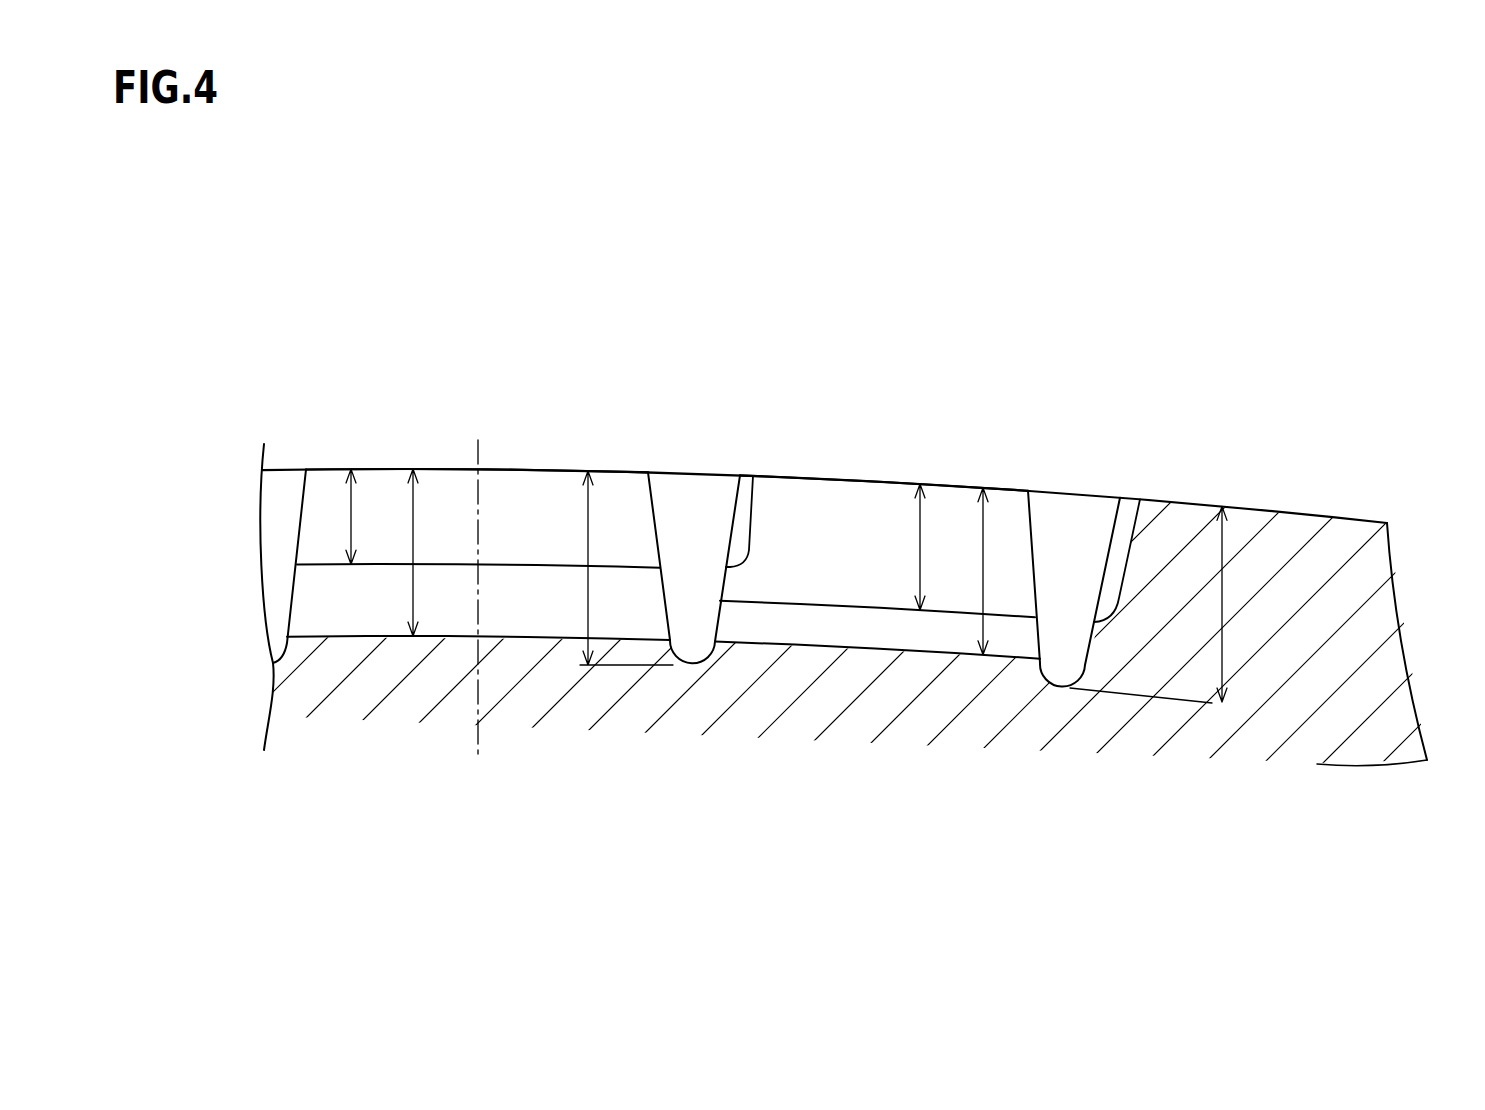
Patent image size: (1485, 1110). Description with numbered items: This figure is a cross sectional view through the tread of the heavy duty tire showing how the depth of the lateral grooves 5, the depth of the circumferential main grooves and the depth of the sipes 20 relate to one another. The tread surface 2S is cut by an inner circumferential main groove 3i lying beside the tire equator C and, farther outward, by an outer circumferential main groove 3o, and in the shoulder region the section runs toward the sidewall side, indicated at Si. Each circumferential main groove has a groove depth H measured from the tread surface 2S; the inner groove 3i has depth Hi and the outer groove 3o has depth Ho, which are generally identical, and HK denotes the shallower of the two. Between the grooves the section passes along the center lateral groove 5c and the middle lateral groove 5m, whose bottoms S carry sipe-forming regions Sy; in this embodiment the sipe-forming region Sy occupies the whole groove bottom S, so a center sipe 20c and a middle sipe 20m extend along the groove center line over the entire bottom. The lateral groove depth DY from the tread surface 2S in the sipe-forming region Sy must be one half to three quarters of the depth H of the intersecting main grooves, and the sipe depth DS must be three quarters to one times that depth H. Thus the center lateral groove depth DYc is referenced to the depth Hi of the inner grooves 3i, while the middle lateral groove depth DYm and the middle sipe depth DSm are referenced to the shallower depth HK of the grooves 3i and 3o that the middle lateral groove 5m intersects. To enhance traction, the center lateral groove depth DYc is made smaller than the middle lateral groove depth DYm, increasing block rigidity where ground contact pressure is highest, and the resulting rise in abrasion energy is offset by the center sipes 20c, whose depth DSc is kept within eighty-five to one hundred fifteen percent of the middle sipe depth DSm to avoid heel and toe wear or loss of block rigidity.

The tread surface 2S is at (1310, 514).
The sidewall inner region Si is at (278, 533).
The lateral grooves 5 is at (477, 364).
The center lateral grooves 5c is at (581, 417).
The middle lateral grooves 5m is at (838, 433).
The inner circumferential main grooves 3i is at (705, 507).
The outer circumferential main grooves 3o is at (1082, 509).
The sipes 20 is at (478, 730).
The center sipes 20c is at (430, 637).
The middle sipes 20m is at (765, 642).
The groove bottom S is at (520, 565).
The sipe-forming region Sy is at (666, 677).
The lateral groove depth DY is at (284, 453).
The center lateral groove depth DYc is at (352, 518).
The sipe depth DS is at (435, 489).
The center sipe depth DSc is at (413, 520).
The middle lateral groove depth DYm is at (923, 537).
The middle sipe depth DSm is at (987, 545).
The groove depth H is at (626, 503).
The inner circumferential main groove depth Hi is at (590, 537).
The shallower circumferential main groove depth HK is at (1191, 666).
The outer circumferential main groove depth Ho is at (1213, 620).
The tire equator C is at (480, 460).